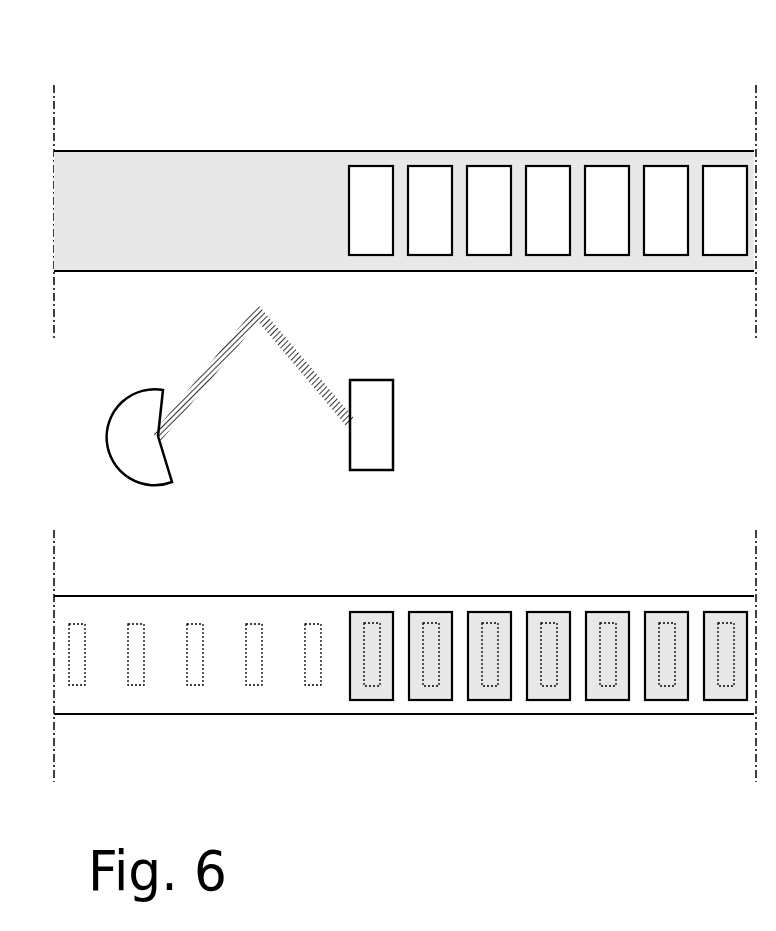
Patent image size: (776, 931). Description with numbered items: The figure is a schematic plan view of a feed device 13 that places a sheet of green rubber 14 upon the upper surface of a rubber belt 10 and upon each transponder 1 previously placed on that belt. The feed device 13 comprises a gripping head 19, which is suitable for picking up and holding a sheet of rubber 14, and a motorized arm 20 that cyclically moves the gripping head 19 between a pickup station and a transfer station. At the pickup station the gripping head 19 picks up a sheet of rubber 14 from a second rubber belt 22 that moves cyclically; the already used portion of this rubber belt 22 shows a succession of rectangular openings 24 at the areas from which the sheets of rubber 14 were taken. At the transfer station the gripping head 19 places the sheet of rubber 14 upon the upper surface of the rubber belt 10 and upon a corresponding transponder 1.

The transponder 1 is at (253, 637).
The rubber belt 10 is at (105, 637).
The feed device 13 is at (565, 498).
The sheet of rubber 14 is at (549, 692).
The gripping head 19 is at (418, 418).
The motorized arm 20 is at (209, 373).
The rubber belt 22 is at (128, 187).
The rectangular openings 24 is at (553, 248).